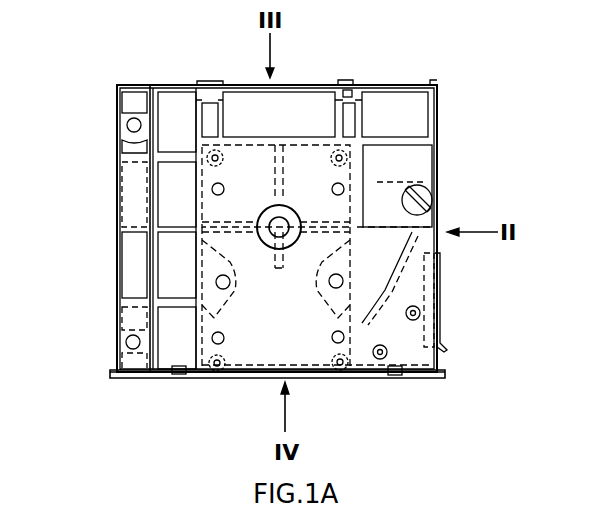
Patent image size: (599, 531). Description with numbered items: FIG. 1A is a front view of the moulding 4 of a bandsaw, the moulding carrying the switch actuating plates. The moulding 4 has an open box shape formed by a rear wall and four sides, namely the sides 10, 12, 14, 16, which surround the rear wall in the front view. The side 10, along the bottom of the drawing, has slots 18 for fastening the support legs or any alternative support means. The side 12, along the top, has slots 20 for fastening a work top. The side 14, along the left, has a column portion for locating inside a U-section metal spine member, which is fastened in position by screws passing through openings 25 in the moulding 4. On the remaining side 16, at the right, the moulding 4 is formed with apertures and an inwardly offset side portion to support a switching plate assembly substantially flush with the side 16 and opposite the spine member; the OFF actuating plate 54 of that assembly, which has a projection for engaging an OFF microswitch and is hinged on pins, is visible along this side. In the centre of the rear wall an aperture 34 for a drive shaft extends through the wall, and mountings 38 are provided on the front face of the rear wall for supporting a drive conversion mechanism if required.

The moulding 4 is at (437, 113).
The side 10 is at (240, 375).
The side 12 is at (313, 85).
The side 14 is at (127, 183).
The side 16 is at (437, 167).
The slots 18 is at (176, 378).
The slots 20 is at (348, 82).
The openings 25 is at (130, 122).
The aperture 34 is at (275, 229).
The mountings 38 is at (210, 341).
The OFF actuating plate 54 is at (443, 285).